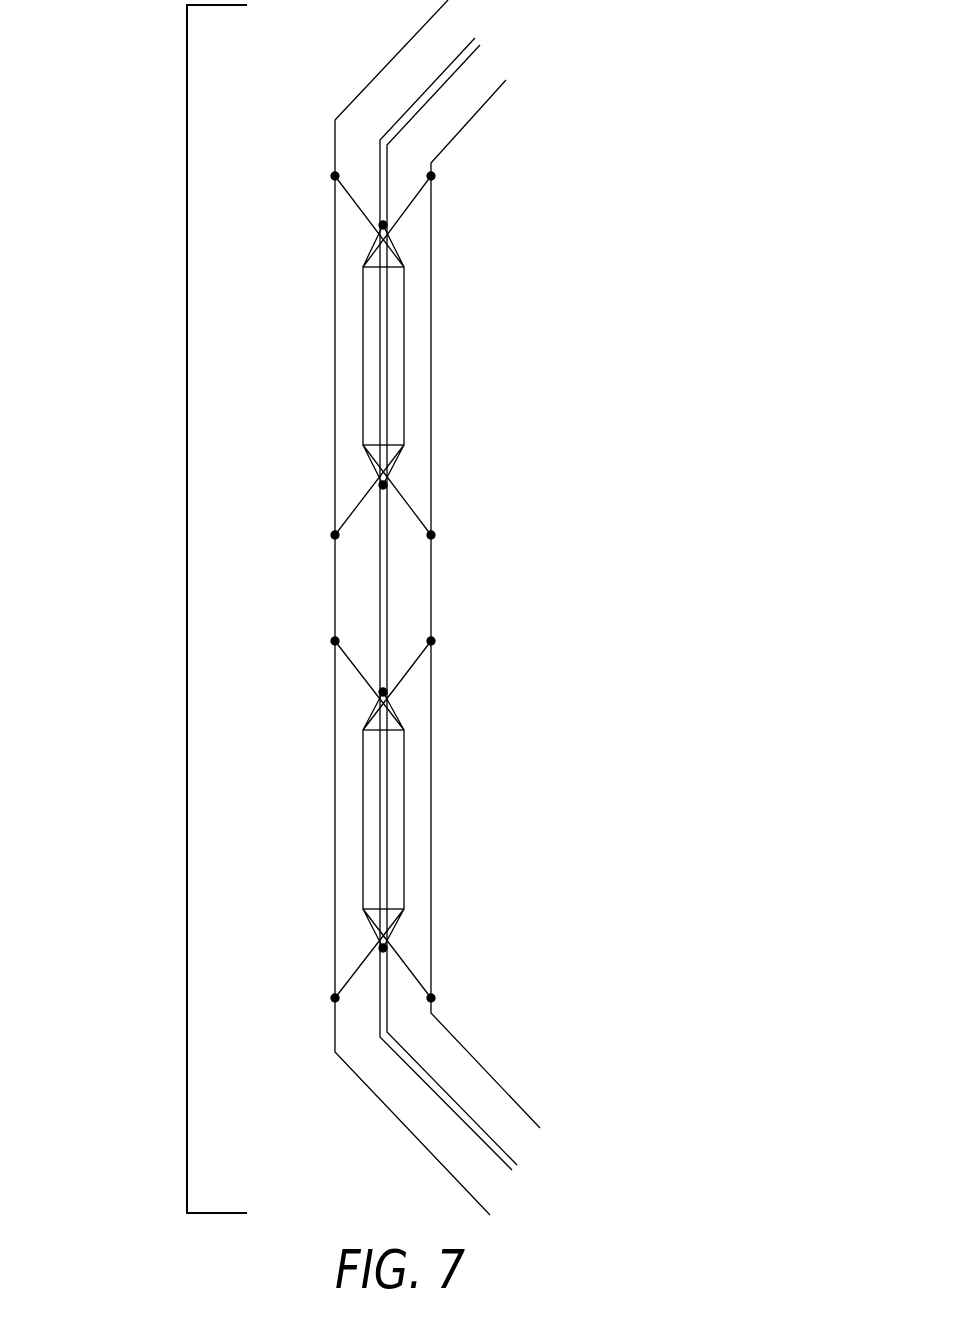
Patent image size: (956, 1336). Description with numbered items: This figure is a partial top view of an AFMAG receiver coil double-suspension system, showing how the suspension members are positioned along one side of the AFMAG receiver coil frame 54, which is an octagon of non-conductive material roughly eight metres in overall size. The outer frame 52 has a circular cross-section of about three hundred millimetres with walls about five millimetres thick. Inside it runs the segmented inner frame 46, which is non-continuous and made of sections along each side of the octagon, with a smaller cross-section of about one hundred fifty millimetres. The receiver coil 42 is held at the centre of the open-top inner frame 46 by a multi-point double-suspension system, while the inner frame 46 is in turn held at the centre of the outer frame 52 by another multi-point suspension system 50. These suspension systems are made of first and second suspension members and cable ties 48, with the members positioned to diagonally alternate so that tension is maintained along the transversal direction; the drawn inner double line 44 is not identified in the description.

The receiver coil 42 is at (433, 95).
The inner core member 44 is at (387, 595).
The segmented inner frame 46 is at (405, 363).
The cable ties 48 is at (335, 535).
The multi-point suspension system 50 is at (415, 490).
The outer frame 52 is at (400, 1125).
The AFMAG receiver coil frame 54 is at (187, 610).